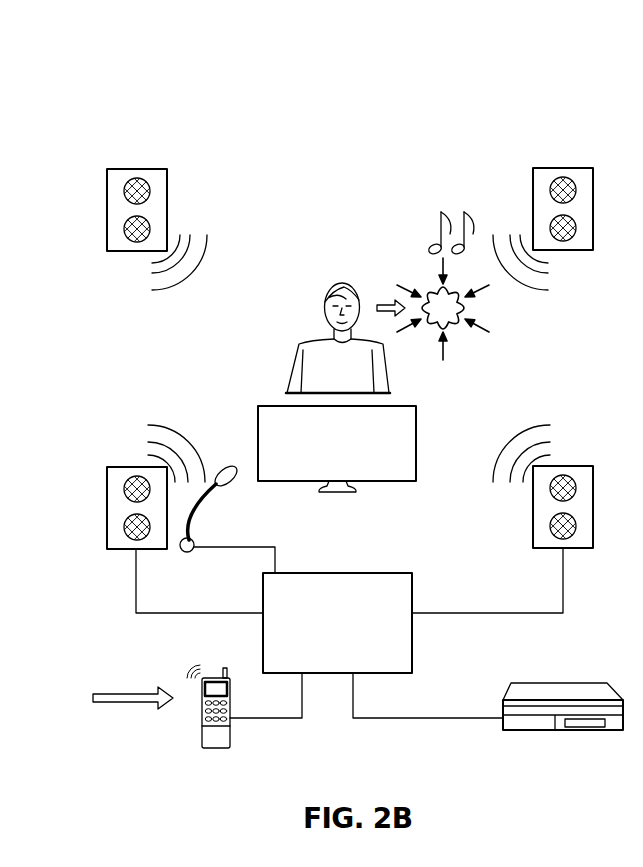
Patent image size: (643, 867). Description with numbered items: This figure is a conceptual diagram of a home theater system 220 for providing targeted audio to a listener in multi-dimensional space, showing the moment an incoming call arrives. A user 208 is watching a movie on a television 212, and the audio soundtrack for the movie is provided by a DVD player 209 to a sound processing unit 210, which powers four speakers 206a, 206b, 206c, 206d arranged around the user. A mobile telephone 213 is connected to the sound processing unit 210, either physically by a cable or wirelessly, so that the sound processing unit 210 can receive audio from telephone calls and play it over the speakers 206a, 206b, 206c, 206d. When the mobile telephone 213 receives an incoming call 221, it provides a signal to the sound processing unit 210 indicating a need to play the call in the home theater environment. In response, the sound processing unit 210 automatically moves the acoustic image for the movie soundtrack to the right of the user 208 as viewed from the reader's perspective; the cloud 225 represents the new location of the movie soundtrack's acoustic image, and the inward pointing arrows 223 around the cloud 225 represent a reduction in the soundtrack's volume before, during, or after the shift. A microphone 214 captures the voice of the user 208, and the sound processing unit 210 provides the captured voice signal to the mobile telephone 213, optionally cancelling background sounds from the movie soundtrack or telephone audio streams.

The sound processing system 220 is at (181, 87).
The speaker 206a is at (138, 168).
The speaker 206b is at (563, 168).
The speaker 206c is at (137, 466).
The speaker 206d is at (563, 466).
The cloud 225 is at (468, 301).
The inward pointing arrows 223 is at (448, 357).
The user 208 is at (387, 357).
The television 212 is at (417, 425).
The sound processing unit 210 is at (338, 572).
The microphone 214 is at (198, 551).
The incoming call 221 is at (122, 618).
The mobile telephone 213 is at (202, 713).
The DVD player 209 is at (560, 683).